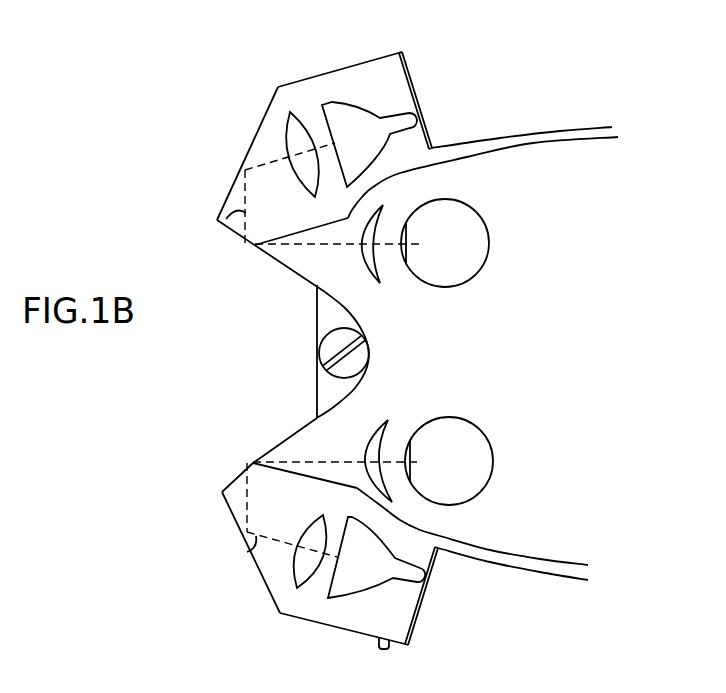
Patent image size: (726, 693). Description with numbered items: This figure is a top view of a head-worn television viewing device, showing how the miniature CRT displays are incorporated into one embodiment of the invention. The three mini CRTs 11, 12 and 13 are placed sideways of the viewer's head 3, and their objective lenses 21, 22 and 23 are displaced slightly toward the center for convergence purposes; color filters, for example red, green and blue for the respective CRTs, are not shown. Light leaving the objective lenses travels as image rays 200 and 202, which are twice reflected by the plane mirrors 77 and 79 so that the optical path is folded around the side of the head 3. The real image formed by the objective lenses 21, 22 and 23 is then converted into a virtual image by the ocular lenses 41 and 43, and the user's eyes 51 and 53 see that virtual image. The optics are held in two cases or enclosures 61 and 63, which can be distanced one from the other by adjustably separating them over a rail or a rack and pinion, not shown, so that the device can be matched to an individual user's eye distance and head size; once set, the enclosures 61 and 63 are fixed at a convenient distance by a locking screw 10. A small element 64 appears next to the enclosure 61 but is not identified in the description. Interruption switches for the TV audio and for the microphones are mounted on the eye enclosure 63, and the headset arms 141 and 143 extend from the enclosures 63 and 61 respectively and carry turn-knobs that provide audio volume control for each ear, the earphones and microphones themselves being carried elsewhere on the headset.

The viewer's head 3 is at (607, 321).
The locking screw 10 is at (316, 353).
The mini CRT 11 is at (484, 328).
The mini CRT 12 is at (373, 350).
The mini CRT 13 is at (377, 114).
The objective lens 21 is at (349, 330).
The objective lens 22 is at (306, 350).
The objective lens 23 is at (304, 118).
The ocular lens 41 is at (404, 397).
The ocular lens 43 is at (380, 284).
The user's eye 51 is at (452, 417).
The user's eye 53 is at (470, 212).
The case or enclosure 61 is at (421, 612).
The case or enclosure 63 is at (281, 86).
The tab 64 is at (381, 649).
The plane mirror 77 is at (243, 163).
The plane mirror 79 is at (270, 257).
The headset arm 141 is at (589, 563).
The headset arm 143 is at (611, 136).
The image ray 200 is at (217, 220).
The image ray 202 is at (250, 549).